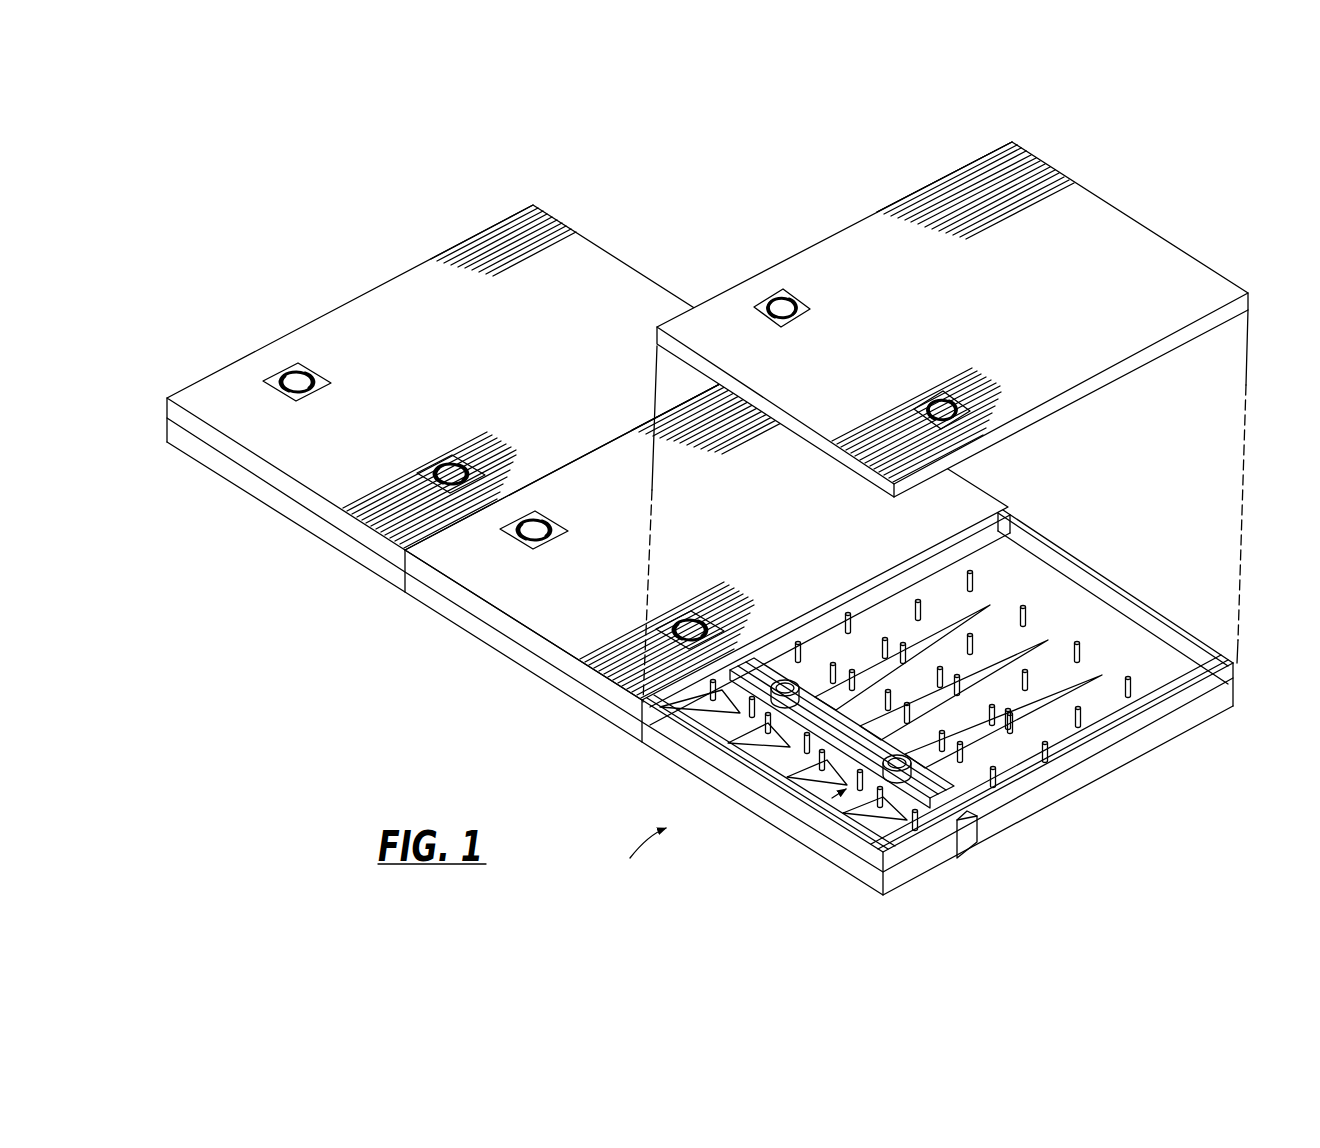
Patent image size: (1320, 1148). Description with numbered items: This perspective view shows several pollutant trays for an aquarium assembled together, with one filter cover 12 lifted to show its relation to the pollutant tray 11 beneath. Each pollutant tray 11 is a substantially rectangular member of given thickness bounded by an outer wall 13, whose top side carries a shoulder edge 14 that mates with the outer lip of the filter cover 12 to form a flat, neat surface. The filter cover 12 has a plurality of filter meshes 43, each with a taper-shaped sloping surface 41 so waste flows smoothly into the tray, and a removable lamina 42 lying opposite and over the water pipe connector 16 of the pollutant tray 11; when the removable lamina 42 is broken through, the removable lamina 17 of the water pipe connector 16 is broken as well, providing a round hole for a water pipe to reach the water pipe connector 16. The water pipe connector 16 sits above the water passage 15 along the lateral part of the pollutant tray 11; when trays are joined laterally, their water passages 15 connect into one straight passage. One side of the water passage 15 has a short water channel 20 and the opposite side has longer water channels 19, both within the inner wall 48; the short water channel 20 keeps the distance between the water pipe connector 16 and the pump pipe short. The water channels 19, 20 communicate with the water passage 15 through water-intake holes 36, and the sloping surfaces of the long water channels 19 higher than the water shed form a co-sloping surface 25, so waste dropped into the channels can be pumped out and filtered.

The pollutant tray 11 is at (636, 858).
The filter cover 12 is at (707, 377).
The outer wall 13 is at (1122, 757).
The shoulder edge 14 is at (1183, 707).
The water passage 15 is at (967, 847).
The water pipe connector 16 is at (725, 690).
The removable lamina 17 is at (787, 688).
The long water channel 19 is at (975, 592).
The short water channel 20 is at (790, 832).
The co-sloping surface 25 is at (1073, 598).
The water-intake hole 36 is at (853, 843).
The taper-shaped sloping surface 41 is at (1028, 153).
The removable lamina 42 is at (295, 377).
The filter mesh 43 is at (1003, 185).
The inner wall 48 is at (1147, 615).